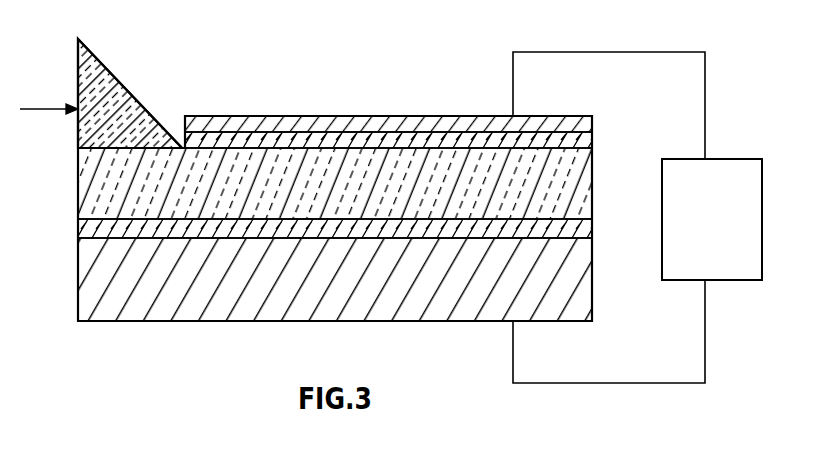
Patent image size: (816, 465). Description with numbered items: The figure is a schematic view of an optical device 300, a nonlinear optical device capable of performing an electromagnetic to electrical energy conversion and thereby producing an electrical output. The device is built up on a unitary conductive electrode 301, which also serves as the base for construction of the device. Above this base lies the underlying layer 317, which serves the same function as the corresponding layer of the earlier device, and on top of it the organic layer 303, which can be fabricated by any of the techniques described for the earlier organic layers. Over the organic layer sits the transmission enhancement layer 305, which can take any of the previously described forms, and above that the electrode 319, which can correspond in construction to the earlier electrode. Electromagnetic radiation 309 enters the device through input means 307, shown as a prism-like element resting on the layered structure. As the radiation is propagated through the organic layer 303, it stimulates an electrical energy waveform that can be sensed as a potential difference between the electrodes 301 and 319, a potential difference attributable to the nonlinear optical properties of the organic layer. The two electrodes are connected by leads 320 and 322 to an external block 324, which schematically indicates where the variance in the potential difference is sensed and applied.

The optical device 300 is at (60, 305).
The unitary conductive electrode 301 is at (343, 321).
The organic layer 303 is at (80, 179).
The transmission enhancement layer 305 is at (395, 138).
The input means 307 is at (112, 75).
The electromagnetic radiation 309 is at (50, 107).
The underlying layer 317 is at (80, 226).
The electrode 319 is at (282, 116).
The electrical lead 320 is at (616, 52).
The electrical lead 322 is at (620, 383).
The sensing and applying means 324 is at (733, 230).